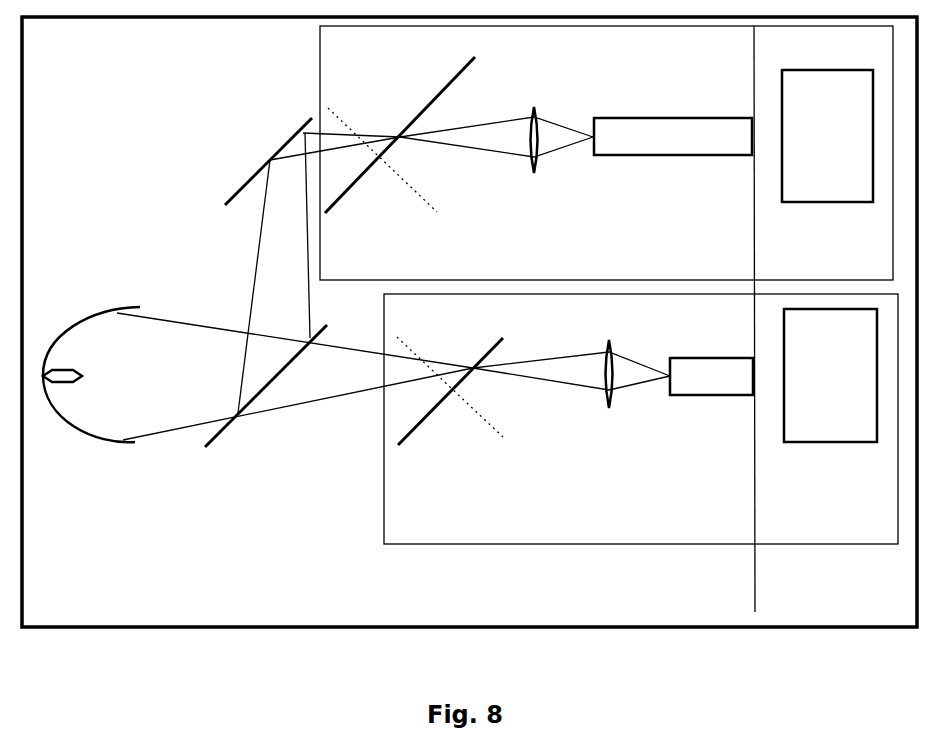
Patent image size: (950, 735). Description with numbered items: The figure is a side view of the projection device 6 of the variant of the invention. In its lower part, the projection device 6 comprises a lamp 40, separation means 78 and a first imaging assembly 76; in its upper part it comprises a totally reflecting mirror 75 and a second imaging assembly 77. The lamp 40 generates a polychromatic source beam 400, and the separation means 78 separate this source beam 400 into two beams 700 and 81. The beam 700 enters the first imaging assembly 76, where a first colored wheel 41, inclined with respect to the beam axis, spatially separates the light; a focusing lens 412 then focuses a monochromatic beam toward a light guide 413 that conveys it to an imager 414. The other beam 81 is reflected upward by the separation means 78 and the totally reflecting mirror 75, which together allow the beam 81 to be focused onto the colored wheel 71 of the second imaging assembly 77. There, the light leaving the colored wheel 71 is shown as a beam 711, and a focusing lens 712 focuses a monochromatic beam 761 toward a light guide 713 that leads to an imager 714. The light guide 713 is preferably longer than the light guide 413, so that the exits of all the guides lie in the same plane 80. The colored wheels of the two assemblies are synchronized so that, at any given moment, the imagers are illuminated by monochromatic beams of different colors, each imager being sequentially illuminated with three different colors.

The projection device 6 is at (285, 650).
The lamp 40 is at (88, 312).
The polychromatic source beam 400 is at (142, 425).
The first colored wheel 41 is at (400, 443).
The focusing lens 412 is at (610, 407).
The light guide 413 is at (682, 388).
The imager 414 is at (830, 413).
The colored wheel 71 is at (423, 100).
The measuring beam 711 is at (538, 375).
The focusing lens 712 is at (533, 170).
The light guide 713 is at (677, 145).
The imager 714 is at (798, 190).
The totally reflecting mirror 75 is at (238, 193).
The first imaging assembly 76 is at (397, 512).
The monochromatic beam 761 is at (463, 142).
The second imaging assembly 77 is at (330, 85).
The separation means 78 is at (215, 433).
The plane 80 is at (753, 573).
The beam 81 is at (273, 228).
The beam 700 is at (303, 388).